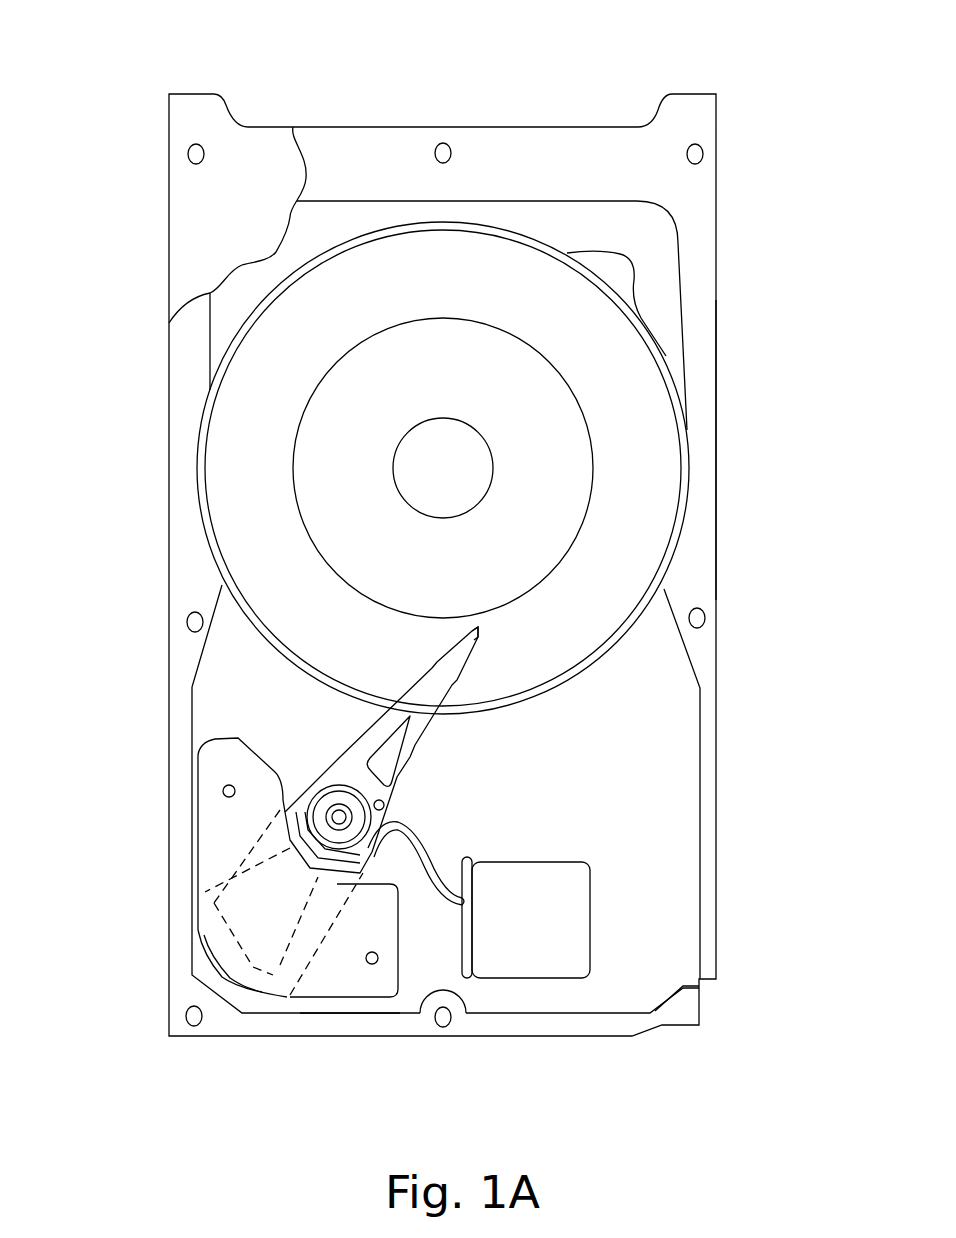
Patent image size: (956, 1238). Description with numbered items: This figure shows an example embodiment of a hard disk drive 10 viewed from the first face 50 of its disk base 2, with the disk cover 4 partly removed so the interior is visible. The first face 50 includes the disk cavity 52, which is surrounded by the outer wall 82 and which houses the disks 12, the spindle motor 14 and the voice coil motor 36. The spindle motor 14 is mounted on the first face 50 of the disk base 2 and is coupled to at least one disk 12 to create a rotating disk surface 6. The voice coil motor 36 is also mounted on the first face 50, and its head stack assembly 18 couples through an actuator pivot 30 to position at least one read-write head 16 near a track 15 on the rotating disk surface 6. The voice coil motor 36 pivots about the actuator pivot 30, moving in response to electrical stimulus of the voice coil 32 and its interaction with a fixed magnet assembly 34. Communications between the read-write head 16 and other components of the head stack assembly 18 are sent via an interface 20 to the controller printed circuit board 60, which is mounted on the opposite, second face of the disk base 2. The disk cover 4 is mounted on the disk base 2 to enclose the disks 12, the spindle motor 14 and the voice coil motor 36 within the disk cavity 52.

The hard disk drive 10 is at (345, 98).
The disk base 2 is at (700, 104).
The disk cover 4 is at (203, 212).
The rotating disk surface 6 is at (443, 468).
The outer wall 82 is at (775, 416).
The spindle motor 14 is at (443, 468).
The track 15 is at (634, 540).
The read-write head 16 is at (483, 631).
The disk 12 is at (596, 634).
The head stack assembly 18 is at (334, 730).
The actuator pivot 30 is at (341, 800).
The voice coil 32 is at (248, 842).
The fixed magnet assembly 34 is at (344, 940).
The voice coil motor 36 is at (185, 905).
The first face 50 is at (456, 873).
The disk cavity 52 is at (446, 799).
The interface 20 is at (526, 917).
The controller printed circuit board 60 is at (693, 996).